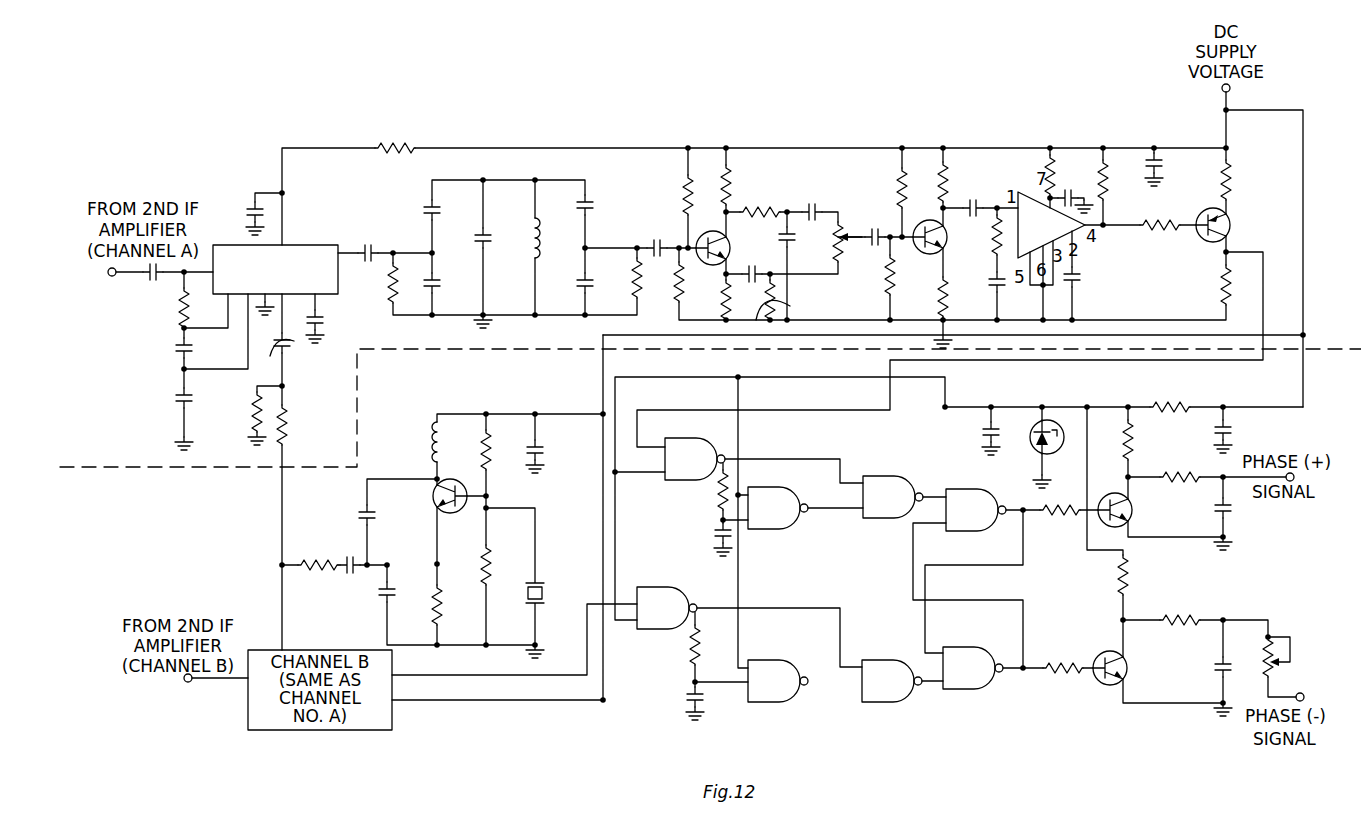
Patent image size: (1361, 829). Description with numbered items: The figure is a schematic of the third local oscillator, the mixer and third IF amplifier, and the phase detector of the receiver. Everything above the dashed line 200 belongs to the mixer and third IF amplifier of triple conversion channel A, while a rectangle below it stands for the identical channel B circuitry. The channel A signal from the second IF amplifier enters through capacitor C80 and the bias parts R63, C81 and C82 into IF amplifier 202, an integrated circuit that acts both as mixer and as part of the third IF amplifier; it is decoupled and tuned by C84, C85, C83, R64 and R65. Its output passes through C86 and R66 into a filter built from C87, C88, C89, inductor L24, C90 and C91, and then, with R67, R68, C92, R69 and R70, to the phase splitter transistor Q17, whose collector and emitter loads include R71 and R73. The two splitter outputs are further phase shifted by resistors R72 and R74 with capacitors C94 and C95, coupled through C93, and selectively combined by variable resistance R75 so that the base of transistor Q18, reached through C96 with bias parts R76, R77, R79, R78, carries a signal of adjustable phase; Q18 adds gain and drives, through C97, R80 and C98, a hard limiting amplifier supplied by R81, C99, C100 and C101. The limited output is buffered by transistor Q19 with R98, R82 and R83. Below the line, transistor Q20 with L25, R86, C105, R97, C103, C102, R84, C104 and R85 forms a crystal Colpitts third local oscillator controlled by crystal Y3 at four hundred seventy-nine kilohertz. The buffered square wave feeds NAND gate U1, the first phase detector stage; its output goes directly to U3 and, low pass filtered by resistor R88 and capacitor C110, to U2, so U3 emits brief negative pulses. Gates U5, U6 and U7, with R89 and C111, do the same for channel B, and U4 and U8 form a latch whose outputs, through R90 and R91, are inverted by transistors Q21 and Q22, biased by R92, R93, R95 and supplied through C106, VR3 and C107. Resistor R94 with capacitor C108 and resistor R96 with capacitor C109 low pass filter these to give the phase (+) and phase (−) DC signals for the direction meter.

The dashed line 200 is at (140, 469).
The IF amplifier 202 is at (314, 245).
The capacitor C80 is at (149, 282).
The resistor R63 is at (166, 308).
The capacitor C81 is at (165, 349).
The capacitor C82 is at (165, 399).
The capacitor C84 is at (247, 196).
The capacitor C85 is at (331, 326).
The variable capacitor C83 is at (297, 354).
The resistor R64 is at (238, 414).
The resistor R65 is at (300, 427).
The capacitor C86 is at (369, 242).
The resistor R66 is at (375, 285).
The capacitor C87 is at (417, 198).
The capacitor C88 is at (449, 291).
The capacitor C89 is at (468, 247).
The inductor L24 is at (518, 229).
The capacitor C90 is at (604, 213).
The capacitor C91 is at (569, 291).
The resistor R67 is at (395, 138).
The resistor R68 is at (619, 284).
The capacitor C92 is at (660, 236).
The resistor R69 is at (670, 182).
The resistor R70 is at (662, 286).
The transistor Q17 is at (734, 242).
The resistor R71 is at (746, 177).
The resistor R72 is at (760, 199).
The capacitor C93 is at (809, 200).
The capacitor C94 is at (804, 244).
The variable resistance R75 is at (853, 248).
The capacitor C95 is at (755, 263).
The resistor R73 is at (709, 300).
The resistor R74 is at (793, 300).
The capacitor C96 is at (875, 225).
The resistor R76 is at (883, 178).
The resistor R77 is at (872, 285).
The transistor Q18 is at (926, 246).
The resistor R79 is at (963, 175).
The capacitor C97 is at (972, 198).
The resistor R80 is at (978, 237).
The capacitor C98 is at (980, 290).
The resistor R78 is at (926, 297).
The resistor R81 is at (1031, 172).
The capacitor C99 is at (1076, 186).
The capacitor C100 is at (1097, 279).
The capacitor C101 is at (1177, 160).
The resistor R82 is at (1246, 177).
The transistor Q19 is at (1234, 227).
The resistor R98 is at (1160, 236).
The resistor R83 is at (1209, 286).
The inductor L25 is at (411, 442).
The transistor Q20 is at (427, 496).
The resistor R86 is at (469, 444).
The capacitor C105 is at (558, 442).
The resistor R97 is at (897, 606).
The crystal Y3 is at (549, 594).
The capacitor C103 is at (343, 515).
The capacitor C102 is at (340, 554).
The resistor R84 is at (318, 578).
The capacitor C104 is at (365, 599).
The resistor R85 is at (456, 612).
The NAND gate U1 is at (695, 459).
The resistor R88 is at (703, 490).
The capacitor C110 is at (698, 534).
The NAND gate U2 is at (778, 508).
The NAND gate U3 is at (893, 497).
The NAND gate U4 is at (976, 510).
The NAND gate U5 is at (667, 608).
The resistor R89 is at (674, 645).
The capacitor C111 is at (669, 696).
The NAND gate U6 is at (778, 681).
The NAND gate U7 is at (892, 681).
The NAND gate U8 is at (973, 668).
The resistor R90 is at (1058, 523).
The resistor R91 is at (1061, 679).
The capacitor C106 is at (964, 429).
The voltage regulator diode VR3 is at (1034, 448).
The resistor R92 is at (1147, 440).
The resistor R93 is at (1167, 396).
The capacitor C107 is at (1247, 428).
The resistor R94 is at (1180, 489).
The capacitor C108 is at (1246, 515).
The transistor Q21 is at (1134, 515).
The resistor R95 is at (1143, 575).
The resistor R96 is at (1179, 632).
The capacitor C109 is at (1195, 677).
The transistor Q22 is at (1129, 676).